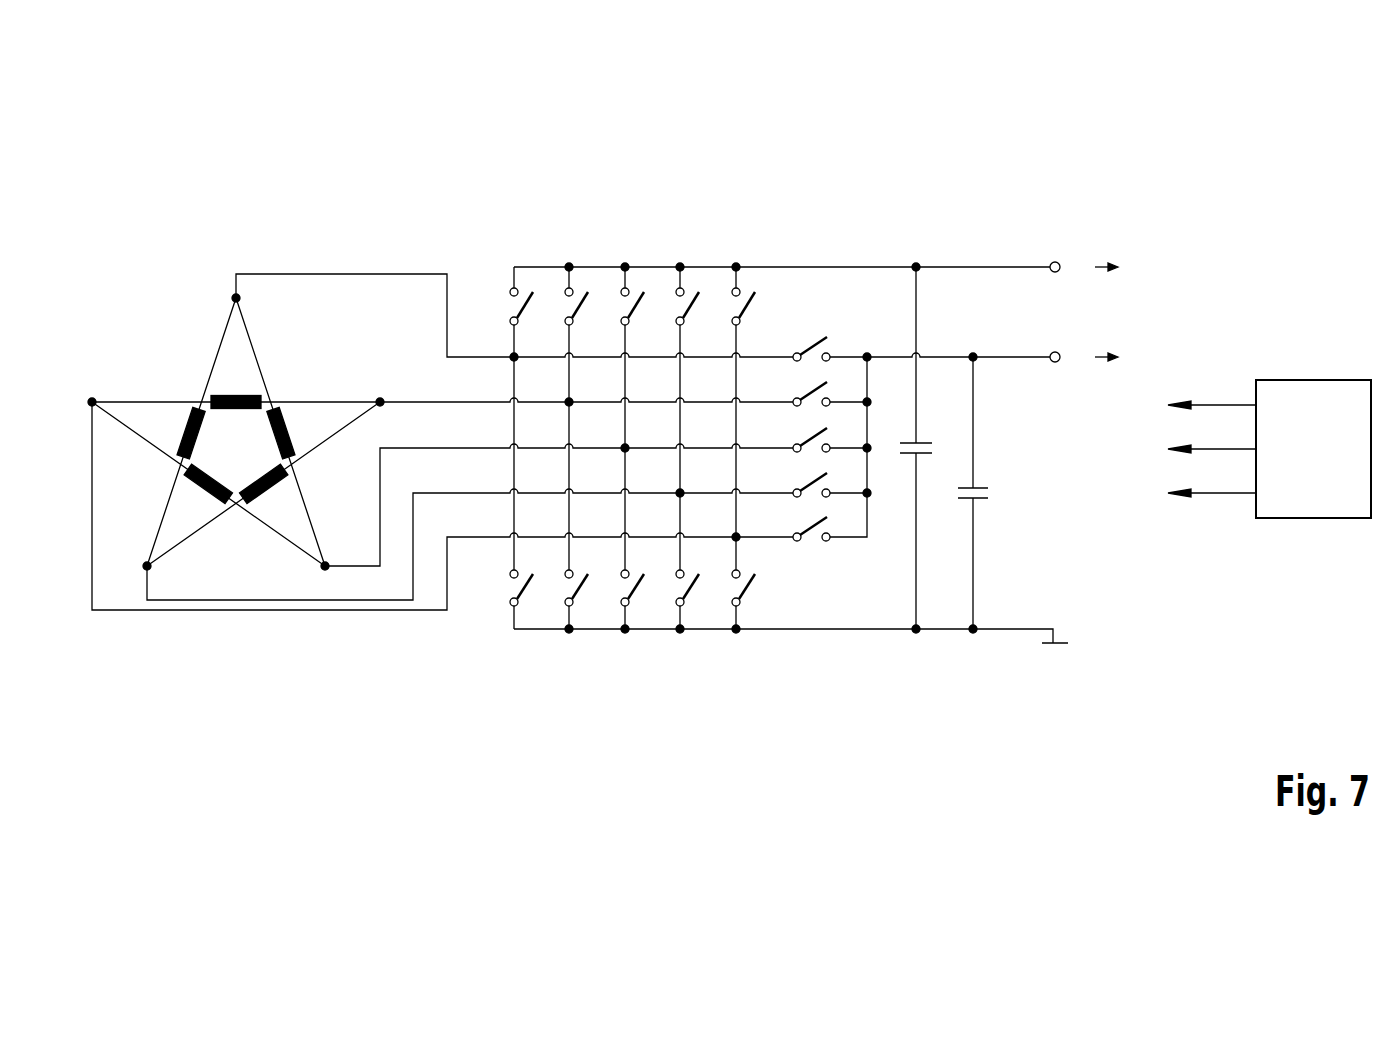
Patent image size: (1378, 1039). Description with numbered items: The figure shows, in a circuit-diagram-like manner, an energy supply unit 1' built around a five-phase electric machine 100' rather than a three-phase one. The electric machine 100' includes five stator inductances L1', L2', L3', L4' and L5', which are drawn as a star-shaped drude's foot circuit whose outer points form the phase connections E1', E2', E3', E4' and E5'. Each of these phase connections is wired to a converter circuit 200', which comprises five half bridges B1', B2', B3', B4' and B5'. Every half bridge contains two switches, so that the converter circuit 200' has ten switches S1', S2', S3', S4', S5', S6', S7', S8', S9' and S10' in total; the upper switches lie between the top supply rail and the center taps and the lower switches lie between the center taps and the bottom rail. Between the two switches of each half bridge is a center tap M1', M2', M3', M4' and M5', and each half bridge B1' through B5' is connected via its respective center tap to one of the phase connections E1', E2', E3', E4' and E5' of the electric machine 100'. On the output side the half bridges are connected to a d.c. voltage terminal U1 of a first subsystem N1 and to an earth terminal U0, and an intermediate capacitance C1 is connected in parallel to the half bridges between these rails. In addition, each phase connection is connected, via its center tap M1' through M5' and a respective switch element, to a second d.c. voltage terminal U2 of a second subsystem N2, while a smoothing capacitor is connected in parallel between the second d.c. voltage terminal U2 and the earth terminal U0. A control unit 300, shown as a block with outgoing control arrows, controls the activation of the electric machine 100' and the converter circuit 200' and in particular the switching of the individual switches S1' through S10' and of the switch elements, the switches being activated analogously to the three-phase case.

The energy supply unit 1' is at (728, 423).
The five-phase electric machine 100' is at (240, 524).
The converter circuit 200' is at (621, 460).
The control unit 300 is at (1313, 380).
The phase connection E1' is at (207, 295).
The phase connection E2' is at (381, 368).
The phase connection E3' is at (335, 532).
The phase connection E4' is at (185, 570).
The phase connection E5' is at (98, 368).
The stator inductance L1' is at (293, 432).
The stator inductance L2' is at (268, 493).
The stator inductance L3' is at (202, 493).
The stator inductance L4' is at (175, 432).
The stator inductance L5' is at (236, 383).
The half bridge B1' is at (509, 201).
The half bridge B2' is at (564, 201).
The half bridge B3' is at (619, 201).
The half bridge B4' is at (674, 201).
The half bridge B5' is at (731, 201).
The switch S1' is at (507, 305).
The switch S2' is at (562, 305).
The switch S3' is at (618, 305).
The switch S4' is at (507, 587).
The switch S5' is at (562, 587).
The switch S6' is at (618, 587).
The switch S7' is at (673, 305).
The switch S8' is at (729, 305).
The switch S9' is at (673, 587).
The switch S10' is at (760, 593).
The center tap M1' is at (643, 333).
The center tap M2' is at (625, 418).
The center tap M3' is at (598, 505).
The center tap M4' is at (509, 544).
The center tap M5' is at (479, 483).
The intermediate capacitance C1 is at (931, 448).
The d.c. voltage terminal U1 is at (1072, 272).
The second d.c. voltage terminal U2 is at (1072, 362).
The earth terminal U0 is at (1080, 637).
The first subsystem N1 is at (1122, 272).
The second subsystem N2 is at (1122, 362).